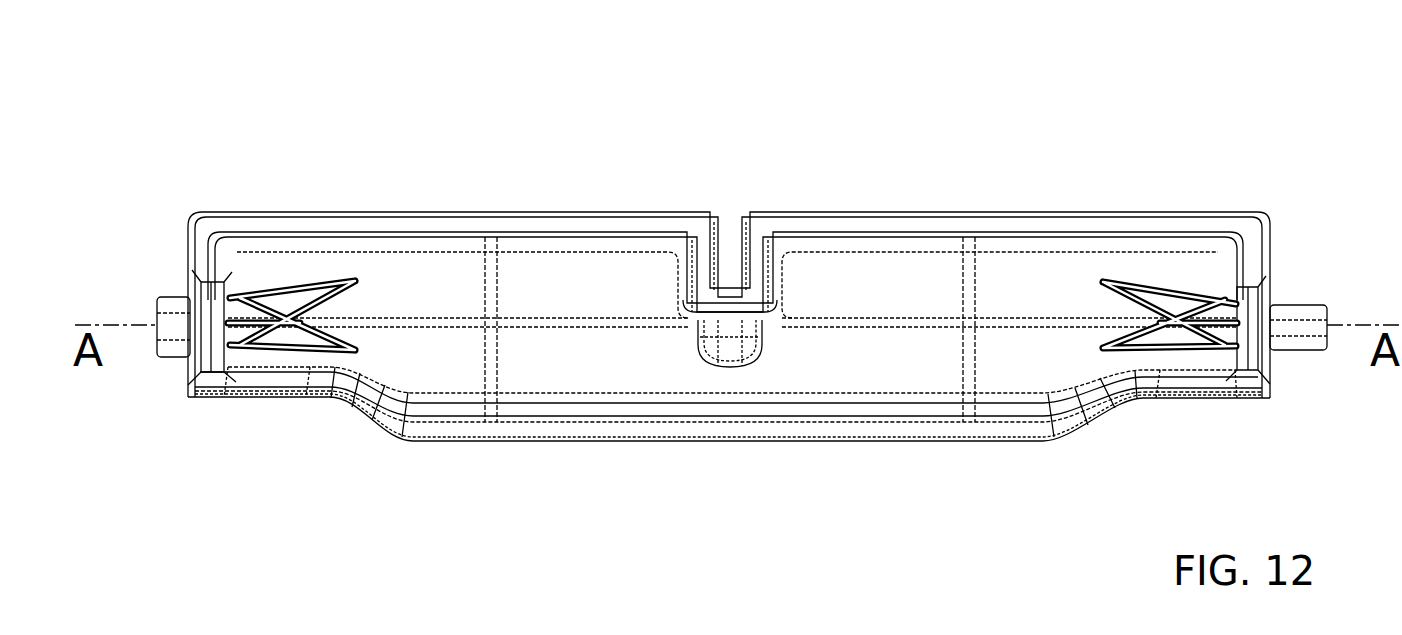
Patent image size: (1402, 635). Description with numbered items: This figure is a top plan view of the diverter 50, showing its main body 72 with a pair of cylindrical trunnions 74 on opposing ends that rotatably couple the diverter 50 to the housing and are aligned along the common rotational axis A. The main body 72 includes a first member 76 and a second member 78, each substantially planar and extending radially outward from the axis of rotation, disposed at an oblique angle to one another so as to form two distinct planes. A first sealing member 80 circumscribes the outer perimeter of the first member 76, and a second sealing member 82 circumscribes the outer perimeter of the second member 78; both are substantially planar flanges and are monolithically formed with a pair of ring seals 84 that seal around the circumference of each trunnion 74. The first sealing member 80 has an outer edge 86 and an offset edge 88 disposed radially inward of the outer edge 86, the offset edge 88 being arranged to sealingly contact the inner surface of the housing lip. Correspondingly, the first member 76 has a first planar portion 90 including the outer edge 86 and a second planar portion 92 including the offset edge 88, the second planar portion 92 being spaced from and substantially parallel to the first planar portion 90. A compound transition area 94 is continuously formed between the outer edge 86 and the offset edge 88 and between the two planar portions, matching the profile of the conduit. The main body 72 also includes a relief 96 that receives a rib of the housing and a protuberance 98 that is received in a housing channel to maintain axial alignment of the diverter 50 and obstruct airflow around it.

The diverter 50 is at (437, 124).
The main body 72 is at (348, 205).
The cylindrical trunnions 74 is at (168, 360).
The first member 76 is at (612, 340).
The second member 78 is at (893, 262).
The first sealing member 80 is at (743, 430).
The second sealing member 82 is at (980, 210).
The ring seals 84 is at (186, 318).
The outer edge 86 is at (922, 448).
The offset edge 88 is at (308, 400).
The first planar portion 90 is at (602, 423).
The second planar portion 92 is at (232, 383).
The transition area 94 is at (348, 412).
The relief 96 is at (731, 238).
The protuberance 98 is at (705, 350).